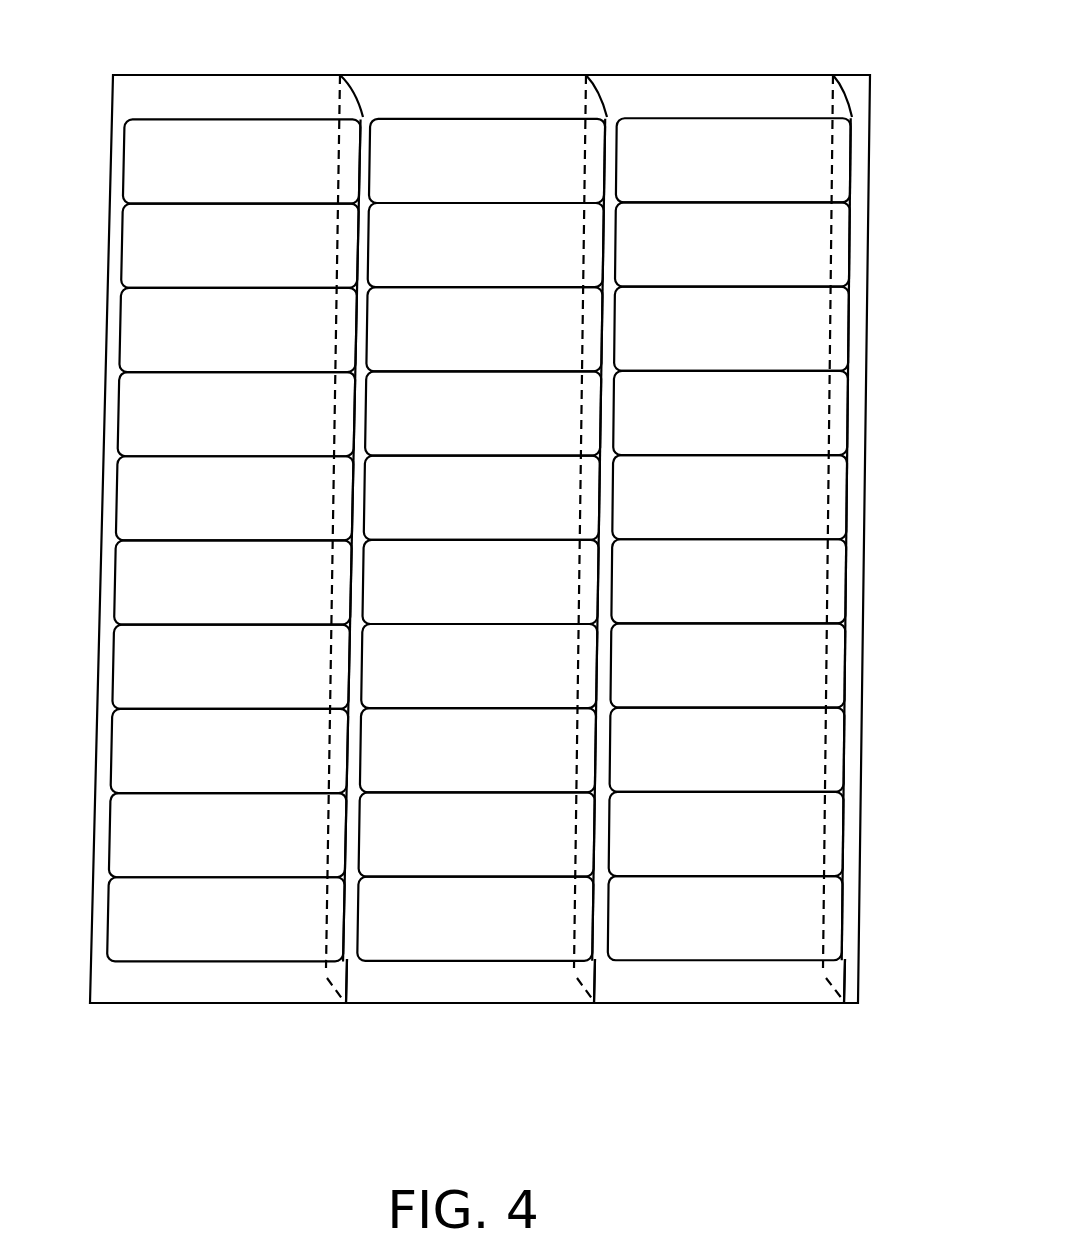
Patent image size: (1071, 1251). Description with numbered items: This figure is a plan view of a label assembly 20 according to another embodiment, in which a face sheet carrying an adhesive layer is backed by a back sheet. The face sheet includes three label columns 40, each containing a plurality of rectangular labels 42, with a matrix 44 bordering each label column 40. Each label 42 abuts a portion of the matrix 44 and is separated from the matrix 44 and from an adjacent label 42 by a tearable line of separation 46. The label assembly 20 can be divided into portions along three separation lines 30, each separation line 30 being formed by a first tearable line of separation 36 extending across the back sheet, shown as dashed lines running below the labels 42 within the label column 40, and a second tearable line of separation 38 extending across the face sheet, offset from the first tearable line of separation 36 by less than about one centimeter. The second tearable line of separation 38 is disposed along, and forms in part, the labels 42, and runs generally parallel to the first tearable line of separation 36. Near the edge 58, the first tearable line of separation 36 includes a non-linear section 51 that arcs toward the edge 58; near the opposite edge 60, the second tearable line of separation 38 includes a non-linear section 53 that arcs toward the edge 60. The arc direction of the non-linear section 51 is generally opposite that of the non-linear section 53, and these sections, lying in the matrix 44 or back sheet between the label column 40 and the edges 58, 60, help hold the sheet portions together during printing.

The label assembly 20 is at (895, 68).
The separation line 30 is at (343, 1014).
The first tearable line of separation 36 is at (338, 320).
The second tearable line of separation 38 is at (362, 248).
The label column 40 is at (215, 972).
The label 42 is at (145, 573).
The matrix 44 is at (242, 95).
The tearable line of separation 46 is at (170, 455).
The non-linear section 51 is at (327, 978).
The non-linear section 53 is at (353, 92).
The edge 58 is at (192, 1003).
The edge 60 is at (460, 76).